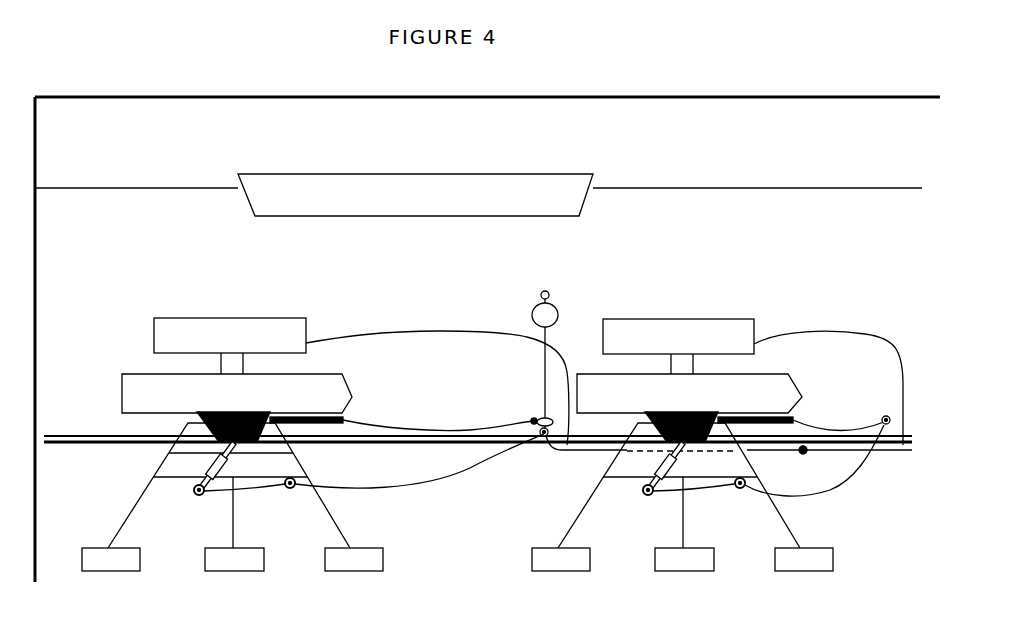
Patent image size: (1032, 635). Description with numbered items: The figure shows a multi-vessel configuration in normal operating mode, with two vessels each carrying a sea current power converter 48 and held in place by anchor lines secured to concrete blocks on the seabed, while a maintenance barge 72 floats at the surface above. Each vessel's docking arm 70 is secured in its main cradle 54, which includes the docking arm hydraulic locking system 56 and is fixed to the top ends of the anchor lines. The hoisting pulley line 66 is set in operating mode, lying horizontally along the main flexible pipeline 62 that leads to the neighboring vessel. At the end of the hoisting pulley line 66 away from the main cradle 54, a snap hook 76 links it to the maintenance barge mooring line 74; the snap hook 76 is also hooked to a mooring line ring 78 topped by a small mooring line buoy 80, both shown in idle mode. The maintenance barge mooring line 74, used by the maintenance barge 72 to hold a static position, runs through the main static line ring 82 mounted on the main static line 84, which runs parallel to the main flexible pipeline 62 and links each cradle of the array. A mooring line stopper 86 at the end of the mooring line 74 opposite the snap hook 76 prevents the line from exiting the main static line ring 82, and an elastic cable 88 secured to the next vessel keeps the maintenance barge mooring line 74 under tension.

The sea current power converter 48 is at (213, 406).
The main cradle 54 is at (235, 471).
The docking arm hydraulic locking system 56 is at (206, 466).
The main flexible pipeline 62 is at (79, 446).
The hoisting pulley line 66 is at (455, 427).
The docking arm 70 is at (196, 420).
The maintenance barge 72 is at (320, 202).
The maintenance barge mooring line 74 is at (573, 452).
The snap hook 76 is at (540, 418).
The mooring line ring 78 is at (531, 312).
The mooring line buoy 80 is at (549, 292).
The main static line ring 82 is at (552, 432).
The main static line 84 is at (92, 434).
The mooring line stopper 86 is at (804, 455).
The elastic cable 88 is at (883, 451).